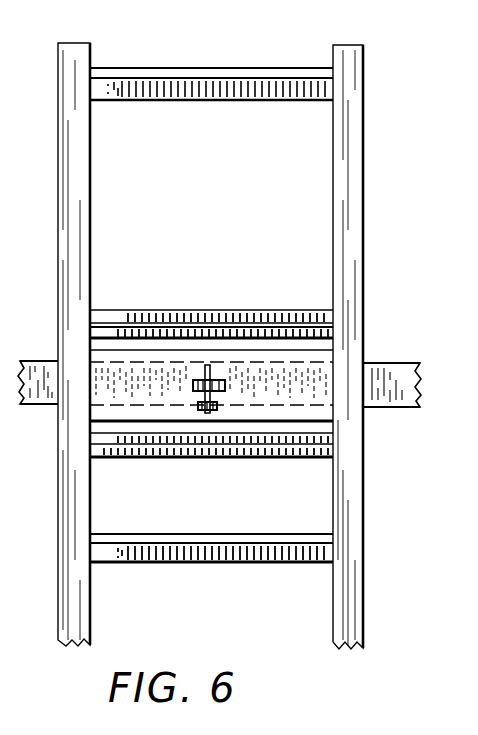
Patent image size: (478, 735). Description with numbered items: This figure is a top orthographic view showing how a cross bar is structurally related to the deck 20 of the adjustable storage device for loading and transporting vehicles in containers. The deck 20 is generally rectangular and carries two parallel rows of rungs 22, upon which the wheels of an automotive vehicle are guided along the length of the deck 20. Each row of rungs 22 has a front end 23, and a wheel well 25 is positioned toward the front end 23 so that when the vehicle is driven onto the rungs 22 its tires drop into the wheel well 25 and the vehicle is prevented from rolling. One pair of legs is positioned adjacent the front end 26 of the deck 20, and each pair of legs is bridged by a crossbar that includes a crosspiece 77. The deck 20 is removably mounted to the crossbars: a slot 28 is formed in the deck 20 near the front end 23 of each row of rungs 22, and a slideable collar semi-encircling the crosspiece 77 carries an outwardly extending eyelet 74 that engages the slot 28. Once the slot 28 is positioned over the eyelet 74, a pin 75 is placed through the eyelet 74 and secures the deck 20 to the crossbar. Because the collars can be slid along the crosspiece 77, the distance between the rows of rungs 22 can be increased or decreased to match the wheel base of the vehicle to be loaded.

The deck 20 is at (350, 152).
The rungs 22 is at (270, 318).
The front end 23 is at (132, 68).
The wheel well 25 is at (224, 199).
The front end 26 is at (283, 68).
The slot 28 is at (226, 374).
The eyelet 74 is at (196, 383).
The pin 75 is at (211, 407).
The crosspiece 77 is at (395, 373).